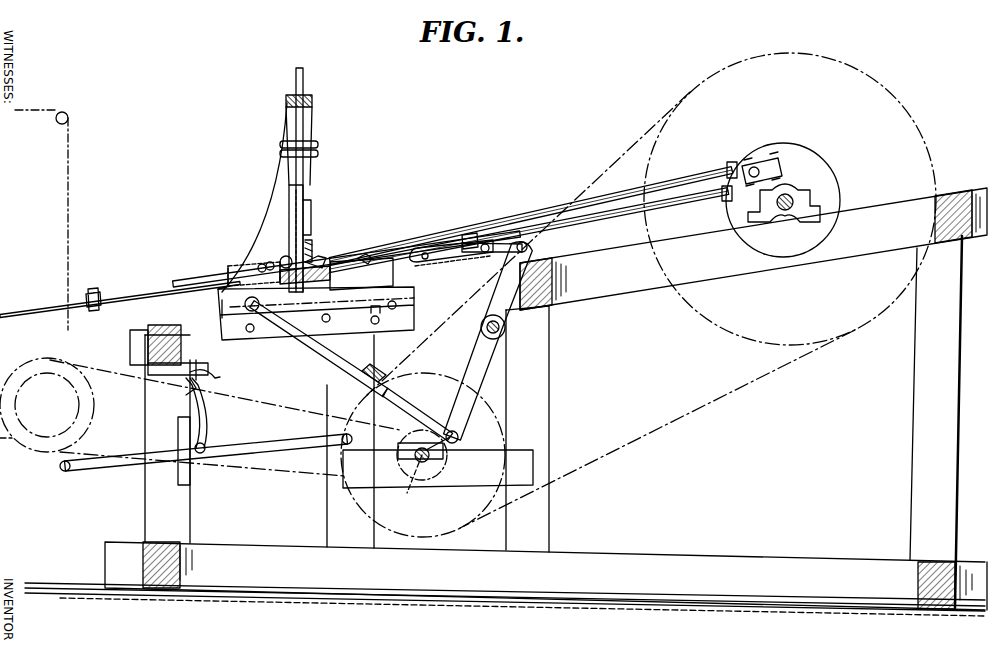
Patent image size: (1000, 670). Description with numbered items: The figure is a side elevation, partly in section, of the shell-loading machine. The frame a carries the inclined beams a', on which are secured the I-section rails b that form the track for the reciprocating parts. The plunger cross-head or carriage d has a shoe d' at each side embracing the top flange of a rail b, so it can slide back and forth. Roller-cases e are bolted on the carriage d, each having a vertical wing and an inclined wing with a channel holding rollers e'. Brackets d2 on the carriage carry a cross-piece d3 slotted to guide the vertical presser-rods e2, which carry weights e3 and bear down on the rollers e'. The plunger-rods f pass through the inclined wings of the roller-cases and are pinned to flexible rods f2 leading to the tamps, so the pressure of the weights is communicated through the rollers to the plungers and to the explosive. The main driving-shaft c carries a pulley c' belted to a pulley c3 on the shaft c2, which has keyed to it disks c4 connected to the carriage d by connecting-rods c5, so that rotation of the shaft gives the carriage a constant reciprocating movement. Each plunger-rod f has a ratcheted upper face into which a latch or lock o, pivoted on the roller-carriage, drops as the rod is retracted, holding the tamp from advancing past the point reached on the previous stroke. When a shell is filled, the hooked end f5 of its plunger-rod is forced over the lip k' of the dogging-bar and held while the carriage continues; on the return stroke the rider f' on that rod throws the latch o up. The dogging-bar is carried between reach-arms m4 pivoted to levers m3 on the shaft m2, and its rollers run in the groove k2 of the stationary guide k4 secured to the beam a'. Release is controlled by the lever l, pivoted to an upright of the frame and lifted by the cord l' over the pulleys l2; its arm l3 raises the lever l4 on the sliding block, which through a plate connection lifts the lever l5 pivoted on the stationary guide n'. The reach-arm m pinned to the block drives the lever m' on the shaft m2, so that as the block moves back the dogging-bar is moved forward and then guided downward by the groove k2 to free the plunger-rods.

The frame a is at (506, 426).
The inclined beams a' is at (753, 249).
The rails b is at (390, 266).
The main driving-shaft c is at (438, 474).
The pulley c' is at (598, 324).
The shaft c2 is at (785, 210).
The pulley c3 is at (922, 130).
The disks c4 is at (840, 190).
The connecting-rods c5 is at (528, 222).
The plunger cross-head or carriage d is at (238, 264).
The shoe d' is at (210, 302).
The brackets d2 is at (276, 198).
The cross-piece d3 is at (312, 100).
The roller-cases e is at (259, 252).
The rollers e' is at (279, 247).
The presser-rods e2 is at (304, 126).
The weights e3 is at (318, 150).
The plunger-rods f is at (109, 306).
The rider f' is at (337, 259).
The flexible rods f2 is at (14, 312).
The hooked end f5 is at (366, 256).
The lip k' is at (459, 223).
The groove k2 is at (426, 250).
The stationary guide k4 is at (528, 249).
The lever l is at (206, 446).
The cord l' is at (50, 228).
The pulleys l2 is at (68, 116).
The arm l3 is at (200, 409).
The lever l4 is at (175, 326).
The lever l5 is at (282, 358).
The reach-arm m is at (349, 369).
The lever m' is at (456, 398).
The shaft m2 is at (506, 328).
The levers m3 is at (498, 298).
The reach-arms m4 is at (496, 242).
The stationary guide n' is at (331, 312).
The latch or lock o is at (322, 258).